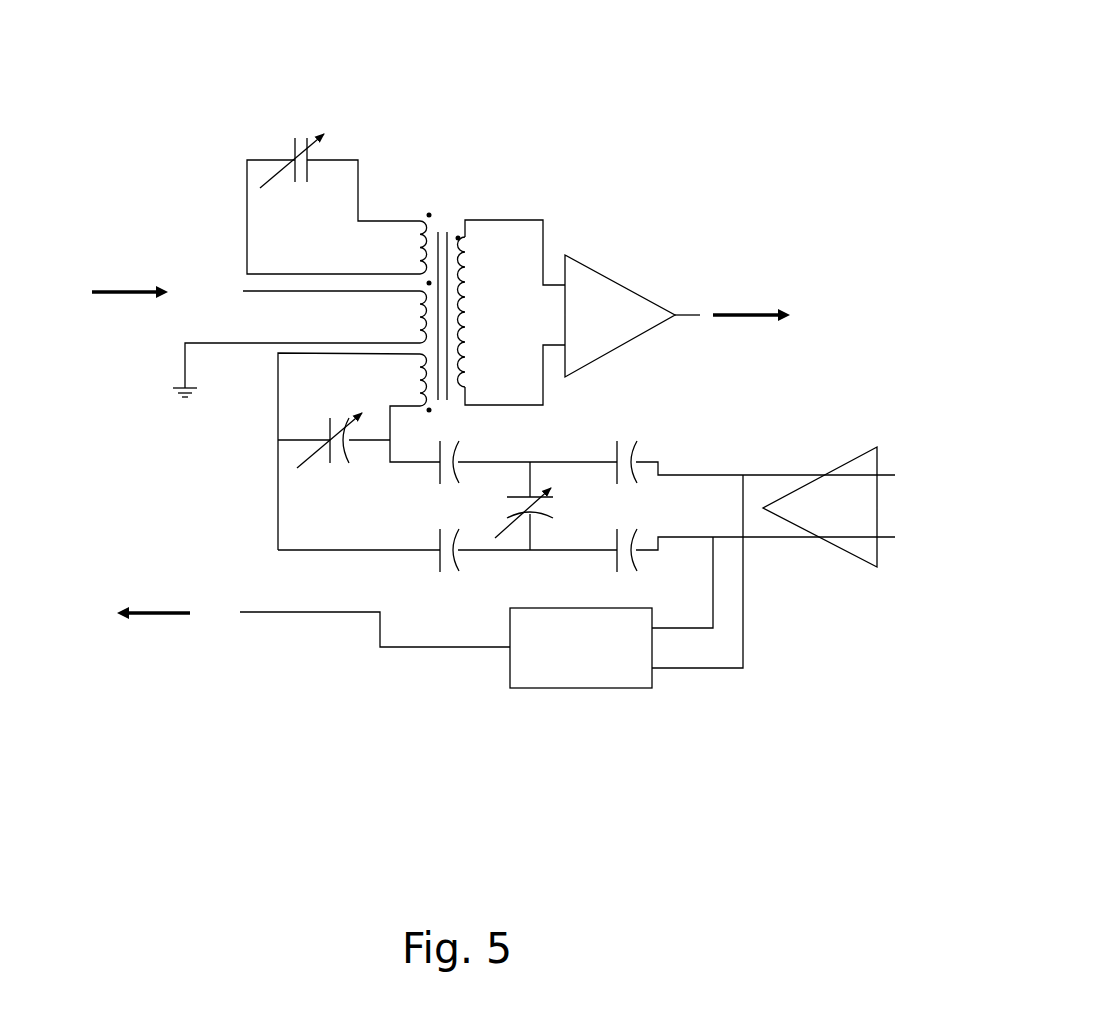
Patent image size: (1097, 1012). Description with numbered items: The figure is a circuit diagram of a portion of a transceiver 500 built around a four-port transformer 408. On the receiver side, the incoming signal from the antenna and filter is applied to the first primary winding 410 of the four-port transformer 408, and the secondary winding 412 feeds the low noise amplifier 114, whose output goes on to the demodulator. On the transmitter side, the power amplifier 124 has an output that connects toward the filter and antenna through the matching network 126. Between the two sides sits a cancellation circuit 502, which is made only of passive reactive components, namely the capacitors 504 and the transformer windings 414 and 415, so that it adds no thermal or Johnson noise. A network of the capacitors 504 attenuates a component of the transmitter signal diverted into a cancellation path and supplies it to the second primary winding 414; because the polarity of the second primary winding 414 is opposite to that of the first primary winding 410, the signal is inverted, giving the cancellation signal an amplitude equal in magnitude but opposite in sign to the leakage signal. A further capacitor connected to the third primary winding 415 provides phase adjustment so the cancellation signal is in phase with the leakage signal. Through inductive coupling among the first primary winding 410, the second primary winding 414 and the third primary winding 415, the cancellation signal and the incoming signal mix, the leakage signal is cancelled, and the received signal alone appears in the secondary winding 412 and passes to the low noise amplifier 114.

The transceiver 500 is at (592, 68).
The cancellation circuit 502 is at (208, 178).
The capacitors 504 is at (290, 142).
The third primary winding 415 is at (376, 218).
The first primary winding 410 is at (393, 288).
The four-port transformer 408 is at (459, 175).
The secondary winding 412 is at (488, 220).
The second primary winding 414 is at (415, 406).
The low noise amplifier 114 is at (610, 290).
The power amplifier 124 is at (793, 520).
The matching network 126 is at (572, 688).